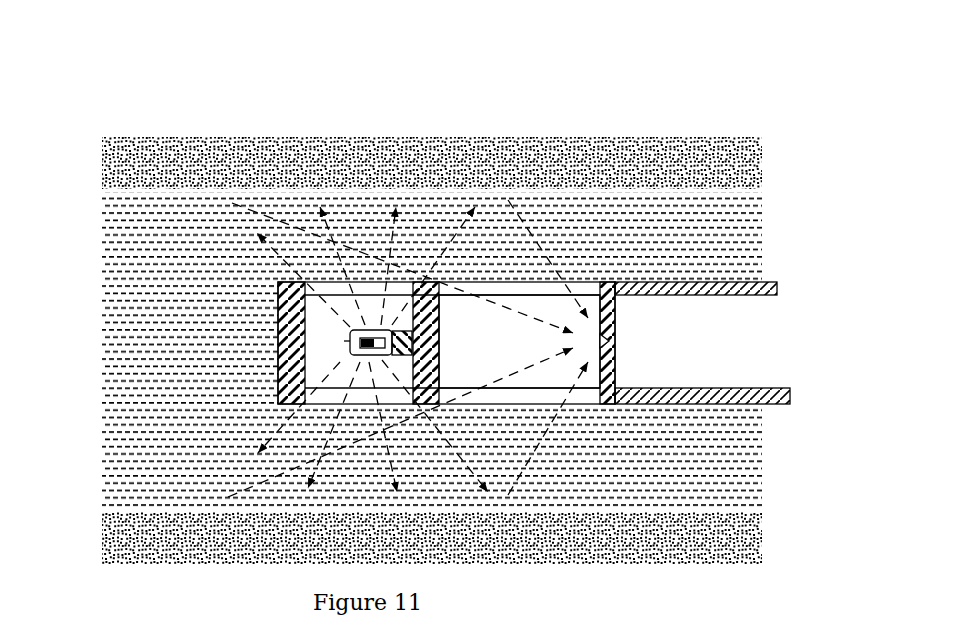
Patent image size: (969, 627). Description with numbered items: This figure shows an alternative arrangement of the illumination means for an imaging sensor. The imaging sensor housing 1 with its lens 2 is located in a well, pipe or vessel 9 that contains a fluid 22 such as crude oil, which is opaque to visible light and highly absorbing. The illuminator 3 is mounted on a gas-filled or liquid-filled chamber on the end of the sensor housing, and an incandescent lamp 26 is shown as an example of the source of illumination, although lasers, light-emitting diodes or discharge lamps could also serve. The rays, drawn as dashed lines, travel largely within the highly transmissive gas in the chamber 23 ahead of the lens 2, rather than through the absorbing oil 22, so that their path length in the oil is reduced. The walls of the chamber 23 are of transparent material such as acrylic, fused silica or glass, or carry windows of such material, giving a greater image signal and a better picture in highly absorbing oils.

The imaging sensor housing 1 is at (653, 283).
The lens 2 is at (615, 340).
The illuminator 3 is at (317, 320).
The well, pipe or vessel 9 is at (183, 186).
The fluid 22 is at (735, 230).
The chamber 23 is at (519, 337).
The incandescent lamp 26 is at (350, 354).